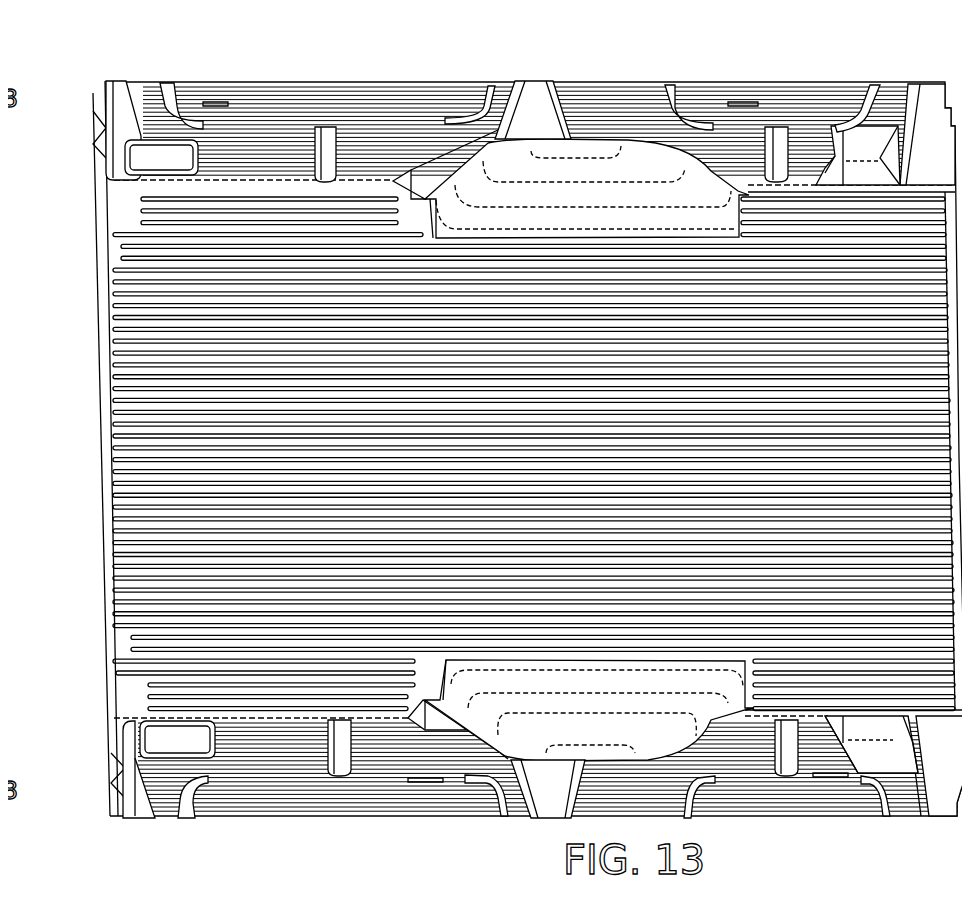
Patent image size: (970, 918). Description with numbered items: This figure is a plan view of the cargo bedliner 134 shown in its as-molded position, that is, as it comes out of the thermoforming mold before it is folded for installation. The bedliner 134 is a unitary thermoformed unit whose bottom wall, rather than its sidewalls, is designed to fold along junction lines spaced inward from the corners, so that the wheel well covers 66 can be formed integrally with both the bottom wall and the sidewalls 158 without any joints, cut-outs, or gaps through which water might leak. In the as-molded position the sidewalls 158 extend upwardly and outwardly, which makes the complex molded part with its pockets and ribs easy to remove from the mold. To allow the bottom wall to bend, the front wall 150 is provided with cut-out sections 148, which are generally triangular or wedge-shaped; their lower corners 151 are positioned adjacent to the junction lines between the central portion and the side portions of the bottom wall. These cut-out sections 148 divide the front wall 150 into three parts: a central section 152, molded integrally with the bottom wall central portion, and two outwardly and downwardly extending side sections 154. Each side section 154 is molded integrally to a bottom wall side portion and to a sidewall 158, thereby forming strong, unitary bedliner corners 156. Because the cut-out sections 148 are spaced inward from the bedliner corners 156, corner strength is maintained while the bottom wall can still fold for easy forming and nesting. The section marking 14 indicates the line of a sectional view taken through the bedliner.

The cargo bedliner 134 is at (778, 66).
The cut-out sections 148 is at (92, 203).
The front wall 150 is at (70, 377).
The lower corners 151 is at (108, 238).
The central section 152 is at (100, 490).
The side sections 154 is at (95, 135).
The bedliner corners 156 is at (99, 72).
The sidewalls 158 is at (290, 95).
The wheel well covers 66 is at (635, 145).
The section line for FIG. 14 is at (390, 62).